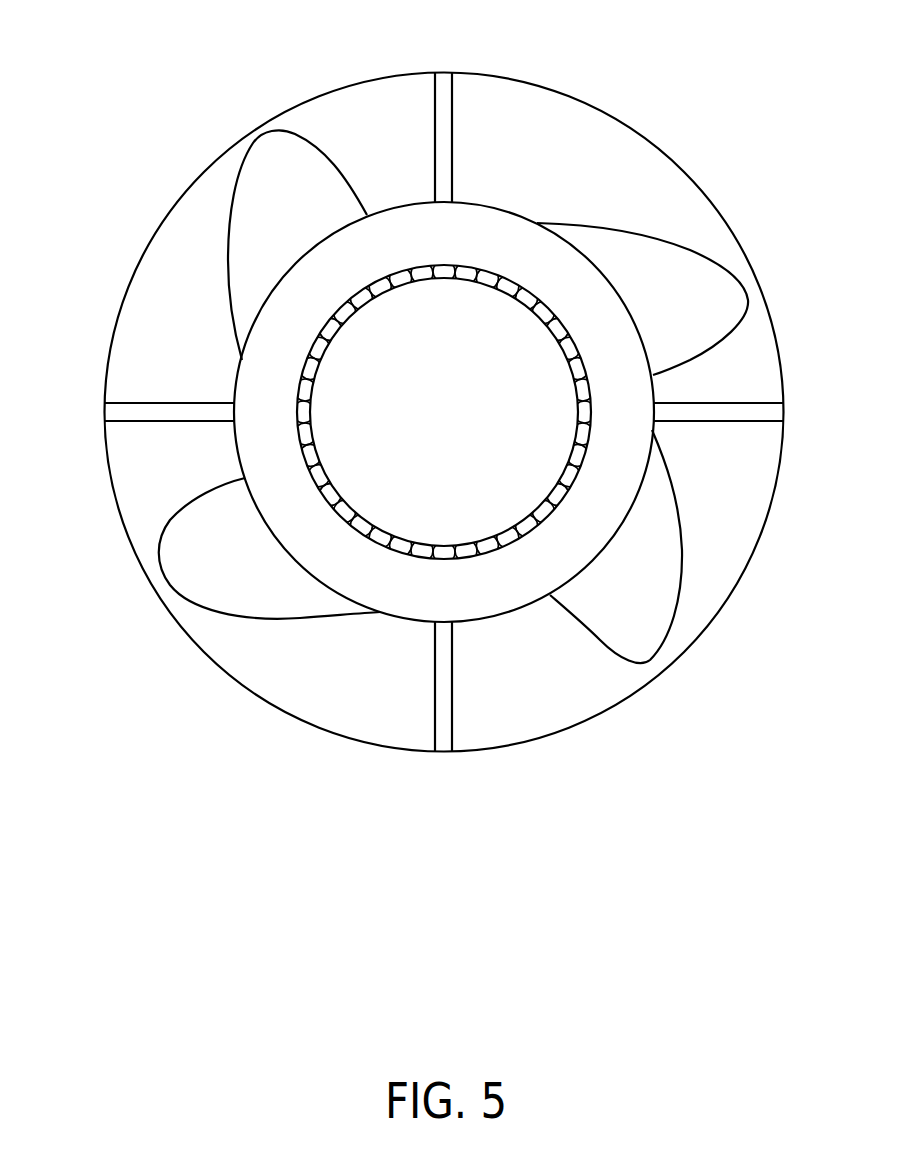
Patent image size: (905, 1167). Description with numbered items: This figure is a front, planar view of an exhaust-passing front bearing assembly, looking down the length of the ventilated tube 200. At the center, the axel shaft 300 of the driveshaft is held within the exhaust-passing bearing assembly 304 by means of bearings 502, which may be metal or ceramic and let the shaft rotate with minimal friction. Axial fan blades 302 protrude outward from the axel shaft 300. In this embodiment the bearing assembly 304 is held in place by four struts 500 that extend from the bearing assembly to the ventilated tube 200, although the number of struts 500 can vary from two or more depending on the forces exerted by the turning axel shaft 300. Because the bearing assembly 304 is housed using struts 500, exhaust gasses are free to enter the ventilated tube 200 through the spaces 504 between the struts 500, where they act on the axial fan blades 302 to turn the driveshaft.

The ventilated tube 200 is at (533, 745).
The axel shaft 300 is at (472, 418).
The axial fan blades 302 is at (258, 197).
The bearing assembly 304 is at (248, 452).
The struts 500 is at (443, 82).
The bearings 502 is at (443, 268).
The spaces 504 is at (648, 152).